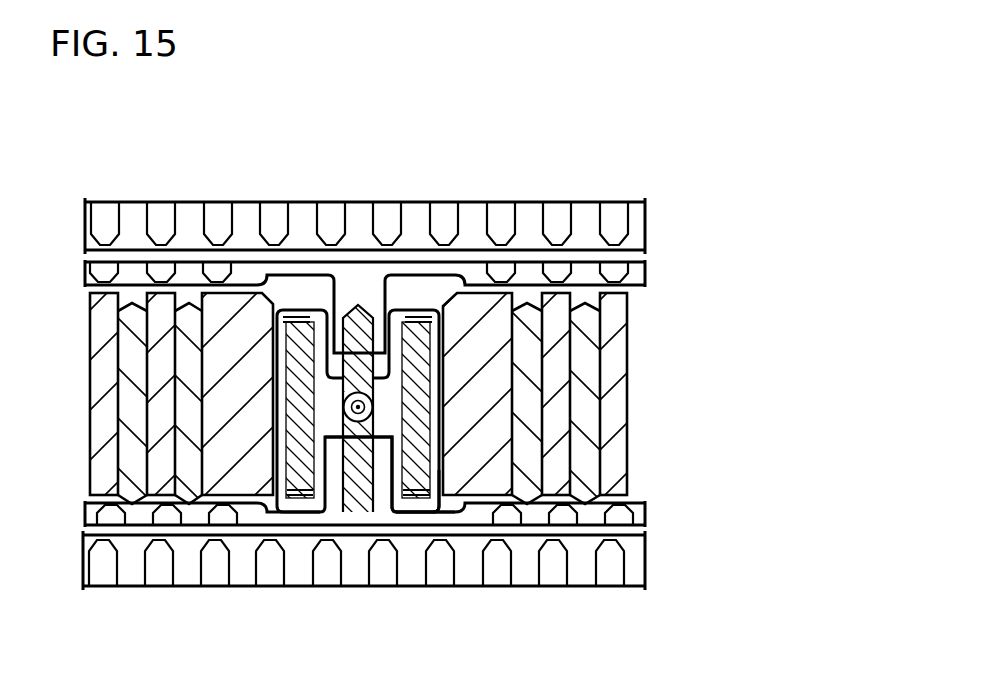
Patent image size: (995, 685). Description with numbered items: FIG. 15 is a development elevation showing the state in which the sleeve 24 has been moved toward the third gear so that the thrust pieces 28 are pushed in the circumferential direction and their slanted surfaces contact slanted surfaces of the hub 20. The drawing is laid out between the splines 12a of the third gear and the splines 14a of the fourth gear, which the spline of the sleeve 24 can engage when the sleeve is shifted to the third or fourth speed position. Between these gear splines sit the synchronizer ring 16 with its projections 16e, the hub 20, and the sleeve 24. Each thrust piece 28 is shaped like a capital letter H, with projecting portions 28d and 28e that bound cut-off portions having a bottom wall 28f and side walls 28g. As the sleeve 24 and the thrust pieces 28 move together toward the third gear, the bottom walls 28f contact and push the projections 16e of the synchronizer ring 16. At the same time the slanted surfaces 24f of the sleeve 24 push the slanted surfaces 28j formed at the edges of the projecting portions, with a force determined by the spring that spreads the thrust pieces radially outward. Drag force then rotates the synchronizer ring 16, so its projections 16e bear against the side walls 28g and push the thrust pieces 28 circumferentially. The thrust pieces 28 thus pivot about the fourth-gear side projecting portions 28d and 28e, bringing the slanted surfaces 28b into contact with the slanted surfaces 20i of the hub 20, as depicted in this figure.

The splines 12a is at (630, 568).
The splines 14a is at (630, 230).
The synchronizer ring 16 is at (632, 292).
The projections 16e is at (388, 475).
The hub 20 is at (253, 483).
The slanted surface 20i is at (412, 507).
The sleeve 24 is at (585, 366).
The slanted surface 24f is at (300, 318).
The thrust piece 28 is at (333, 310).
The slanted surface 28b is at (440, 478).
The projecting portion 28d is at (282, 312).
The projecting portion 28e is at (441, 312).
The bottom wall 28f is at (361, 440).
The side wall 28g is at (400, 510).
The slanted surface 28j is at (407, 312).